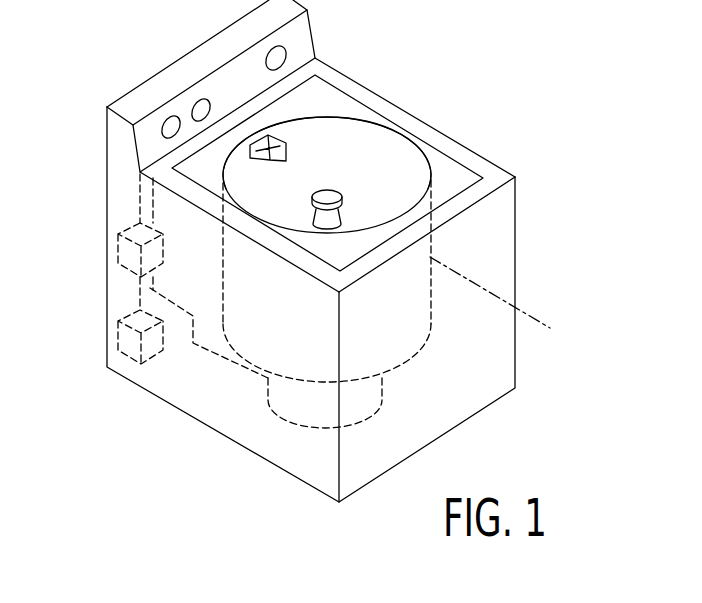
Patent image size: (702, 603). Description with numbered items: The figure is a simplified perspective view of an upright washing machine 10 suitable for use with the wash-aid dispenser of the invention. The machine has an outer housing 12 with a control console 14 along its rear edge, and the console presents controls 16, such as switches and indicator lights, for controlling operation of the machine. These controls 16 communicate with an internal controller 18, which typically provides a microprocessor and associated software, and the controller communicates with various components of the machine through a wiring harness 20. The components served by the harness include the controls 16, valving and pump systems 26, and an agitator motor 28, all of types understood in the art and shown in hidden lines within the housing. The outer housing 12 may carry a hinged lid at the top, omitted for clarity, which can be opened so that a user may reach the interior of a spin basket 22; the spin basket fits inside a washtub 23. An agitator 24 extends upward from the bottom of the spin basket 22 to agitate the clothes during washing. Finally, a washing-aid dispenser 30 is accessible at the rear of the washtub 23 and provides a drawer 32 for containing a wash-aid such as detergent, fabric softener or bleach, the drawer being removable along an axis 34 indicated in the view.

The washing machine 10 is at (446, 39).
The outer housing 12 is at (500, 212).
The control console 14 is at (313, 33).
The controls 16 is at (268, 48).
The internal controller 18 is at (117, 234).
The wiring harness 20 is at (162, 128).
The spin basket 22 is at (388, 174).
The washtub 23 is at (428, 191).
The agitator 24 is at (343, 194).
The valving and pump systems 26 is at (117, 322).
The agitator motor 28 is at (290, 423).
The washing-aid dispenser 30 is at (285, 141).
The drawer 32 is at (387, 257).
The axis 34 is at (527, 313).